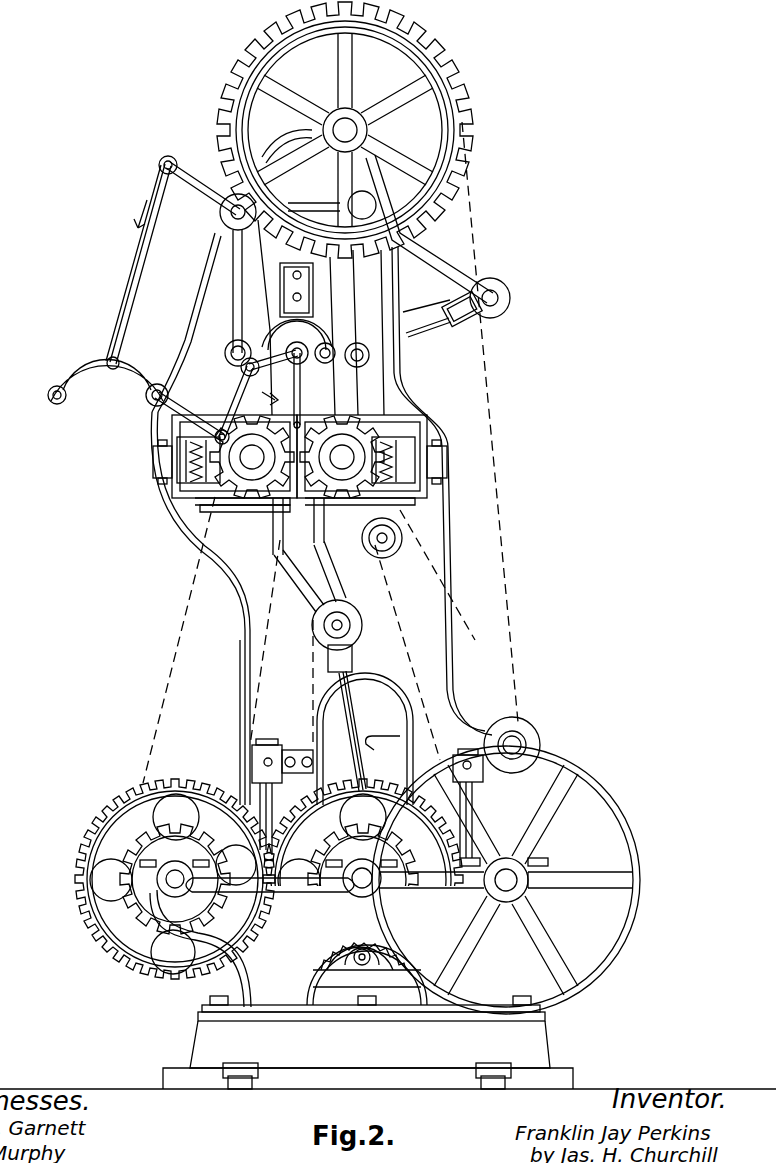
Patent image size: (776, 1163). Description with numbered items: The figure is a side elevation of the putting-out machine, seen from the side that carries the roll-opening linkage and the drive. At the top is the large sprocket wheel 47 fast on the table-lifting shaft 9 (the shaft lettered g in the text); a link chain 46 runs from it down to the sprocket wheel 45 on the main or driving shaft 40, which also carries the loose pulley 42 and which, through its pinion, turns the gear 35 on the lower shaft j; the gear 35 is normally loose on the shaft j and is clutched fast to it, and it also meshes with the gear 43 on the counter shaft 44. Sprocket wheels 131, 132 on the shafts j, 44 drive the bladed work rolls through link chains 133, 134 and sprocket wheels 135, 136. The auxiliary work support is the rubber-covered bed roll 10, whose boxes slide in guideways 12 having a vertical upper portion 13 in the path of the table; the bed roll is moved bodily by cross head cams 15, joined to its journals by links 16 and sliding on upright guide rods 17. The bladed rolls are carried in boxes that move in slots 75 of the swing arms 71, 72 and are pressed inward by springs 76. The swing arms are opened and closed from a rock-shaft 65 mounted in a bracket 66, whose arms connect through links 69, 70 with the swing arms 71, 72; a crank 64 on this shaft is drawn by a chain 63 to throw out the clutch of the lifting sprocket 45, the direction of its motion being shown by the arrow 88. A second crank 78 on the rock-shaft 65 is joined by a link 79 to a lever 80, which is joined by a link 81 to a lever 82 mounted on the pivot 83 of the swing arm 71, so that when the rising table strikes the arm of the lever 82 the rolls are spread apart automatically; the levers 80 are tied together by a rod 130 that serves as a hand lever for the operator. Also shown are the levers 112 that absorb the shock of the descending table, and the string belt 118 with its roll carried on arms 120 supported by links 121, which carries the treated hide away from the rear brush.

The large sprocket wheel 47 is at (462, 118).
The table lifting shaft 9 is at (358, 131).
The pivot 83 is at (232, 218).
The lever 82 is at (197, 188).
The link 81 is at (138, 268).
The second crank 78 is at (244, 345).
The bracket 66 is at (280, 284).
The link 70 is at (333, 340).
The rock-shaft 65 is at (274, 359).
The link 69 is at (318, 364).
The crank 64 is at (302, 403).
The link 79 is at (234, 402).
The arrow 88 is at (260, 404).
The lever 80 is at (150, 410).
The rod 130 is at (55, 403).
The swing arm 71 is at (216, 280).
The swing arm 72 is at (400, 378).
The links 121 is at (438, 256).
The cranks or arms 120 is at (428, 312).
The string belt 118 is at (448, 336).
The link chain 46 is at (495, 471).
The springs 76 is at (299, 460).
The slots 75 is at (168, 480).
The sprocket wheel 135 is at (385, 518).
The sprocket wheel 136 is at (248, 506).
The link chain 134 is at (177, 640).
The vertical upper portion of guideway 13 is at (280, 532).
The bed roll 10 is at (318, 600).
The guideways 12 is at (332, 575).
The links 16 is at (350, 700).
The link chain 133 is at (281, 656).
The upright guide rods 17 is at (278, 783).
The levers 112 is at (384, 736).
The chain 63 is at (455, 610).
The gear 43 is at (125, 800).
The sprocket wheel 132 is at (205, 840).
The counter shaft 44 is at (180, 890).
The sprocket wheel 131 is at (318, 886).
The gear 35 is at (370, 790).
The shaft j is at (356, 888).
The loose pulley 42 is at (590, 888).
The main or driving shaft 40 is at (490, 890).
The sprocket wheel 45 is at (540, 858).
The cross head cams 15 is at (537, 894).